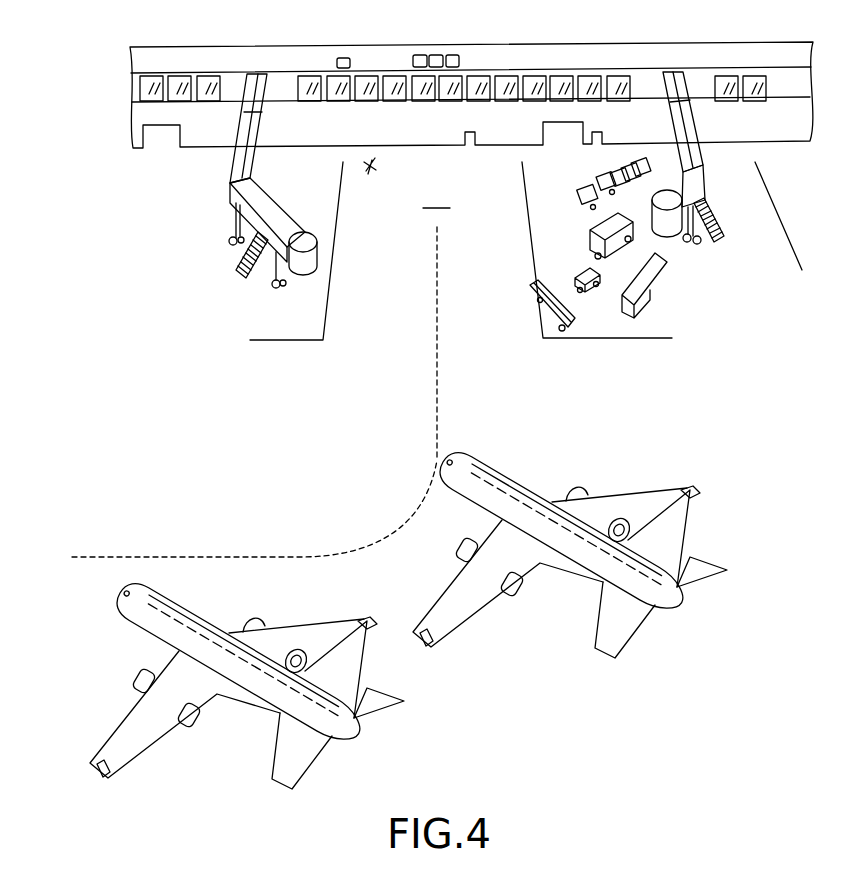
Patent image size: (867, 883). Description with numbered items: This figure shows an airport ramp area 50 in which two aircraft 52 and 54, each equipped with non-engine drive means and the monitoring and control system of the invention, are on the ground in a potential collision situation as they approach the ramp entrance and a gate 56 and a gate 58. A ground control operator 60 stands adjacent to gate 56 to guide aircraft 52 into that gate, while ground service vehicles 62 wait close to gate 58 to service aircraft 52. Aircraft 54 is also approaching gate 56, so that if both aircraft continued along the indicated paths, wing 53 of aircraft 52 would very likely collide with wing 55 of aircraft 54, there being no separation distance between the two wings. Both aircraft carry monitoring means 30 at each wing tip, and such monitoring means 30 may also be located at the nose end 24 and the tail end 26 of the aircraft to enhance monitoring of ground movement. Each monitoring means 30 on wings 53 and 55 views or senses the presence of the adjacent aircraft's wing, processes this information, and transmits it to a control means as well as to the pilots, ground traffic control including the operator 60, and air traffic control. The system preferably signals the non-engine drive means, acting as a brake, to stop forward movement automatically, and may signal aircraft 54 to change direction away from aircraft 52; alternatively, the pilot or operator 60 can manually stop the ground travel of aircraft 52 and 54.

The nose end 24 is at (437, 462).
The tail end 26 is at (683, 608).
The monitoring means 30 is at (367, 617).
The airport ramp area 50 is at (145, 302).
The aircraft 52 is at (112, 713).
The wing 53 is at (285, 645).
The aircraft 54 is at (628, 477).
The wing 55 is at (462, 613).
The gate 56 is at (300, 283).
The gate 58 is at (712, 297).
The ground control operator 60 is at (370, 160).
The ground service vehicles 62 is at (563, 261).